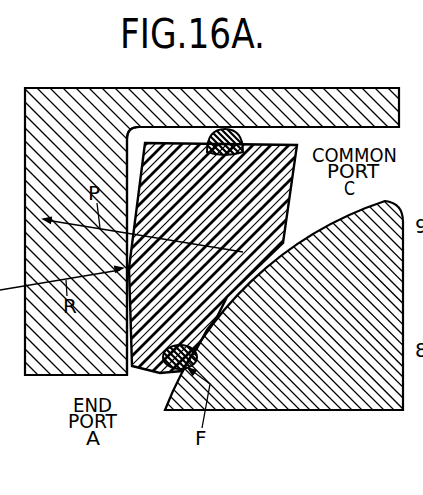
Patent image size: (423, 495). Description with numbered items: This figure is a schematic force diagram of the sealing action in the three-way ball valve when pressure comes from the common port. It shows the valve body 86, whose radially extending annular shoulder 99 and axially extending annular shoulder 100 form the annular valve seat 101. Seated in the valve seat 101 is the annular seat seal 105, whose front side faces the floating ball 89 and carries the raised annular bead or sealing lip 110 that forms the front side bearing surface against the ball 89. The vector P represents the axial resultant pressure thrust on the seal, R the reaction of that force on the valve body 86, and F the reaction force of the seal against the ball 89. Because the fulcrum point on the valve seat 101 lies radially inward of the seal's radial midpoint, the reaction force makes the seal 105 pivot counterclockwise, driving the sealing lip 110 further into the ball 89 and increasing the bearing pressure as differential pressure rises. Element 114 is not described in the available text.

The valve body 86 is at (40, 372).
The ball 89 is at (310, 400).
The radially extending annular shoulder 99 is at (124, 151).
The axially extending annular shoulder 100 is at (145, 127).
The annular valve seat 101 is at (118, 124).
The seat seal 105 is at (222, 215).
The sealing lip 110 is at (178, 361).
The pin 114 is at (224, 133).